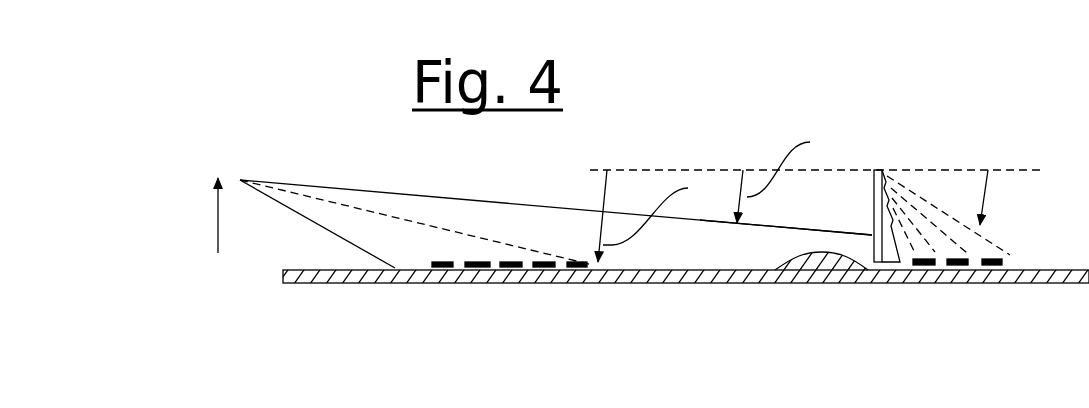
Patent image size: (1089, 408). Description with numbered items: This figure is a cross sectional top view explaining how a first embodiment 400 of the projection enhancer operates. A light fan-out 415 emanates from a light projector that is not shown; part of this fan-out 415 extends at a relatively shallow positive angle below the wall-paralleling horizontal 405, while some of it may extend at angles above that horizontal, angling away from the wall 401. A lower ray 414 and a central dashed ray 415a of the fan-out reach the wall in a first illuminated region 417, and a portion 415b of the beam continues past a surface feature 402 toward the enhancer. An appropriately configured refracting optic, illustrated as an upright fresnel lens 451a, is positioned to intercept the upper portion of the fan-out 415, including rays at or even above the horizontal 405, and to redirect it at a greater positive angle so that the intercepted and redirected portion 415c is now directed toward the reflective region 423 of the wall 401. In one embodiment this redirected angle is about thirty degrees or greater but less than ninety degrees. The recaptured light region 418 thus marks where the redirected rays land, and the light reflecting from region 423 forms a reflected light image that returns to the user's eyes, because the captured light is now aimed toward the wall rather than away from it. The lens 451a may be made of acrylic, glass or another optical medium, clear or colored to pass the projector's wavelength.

The first embodiment of the projection enhancer 400 is at (777, 90).
The wall 401 is at (700, 287).
The bump / surface feature 402 is at (803, 256).
The wall-paralleling horizontal 405 is at (647, 168).
The lower boundary light ray 414 is at (294, 247).
The light fan-out 415 is at (317, 183).
The central ray of light beam 415a is at (478, 237).
The light beam portion passing bump 415b is at (793, 221).
The intercepted and redirected portion of the fan-out 415c is at (918, 193).
The illuminated region on substrate 417 is at (572, 185).
The recaptured light region 418 is at (1030, 116).
The reflective region of the wall 423 is at (997, 250).
The fresnel lens 451a is at (877, 163).